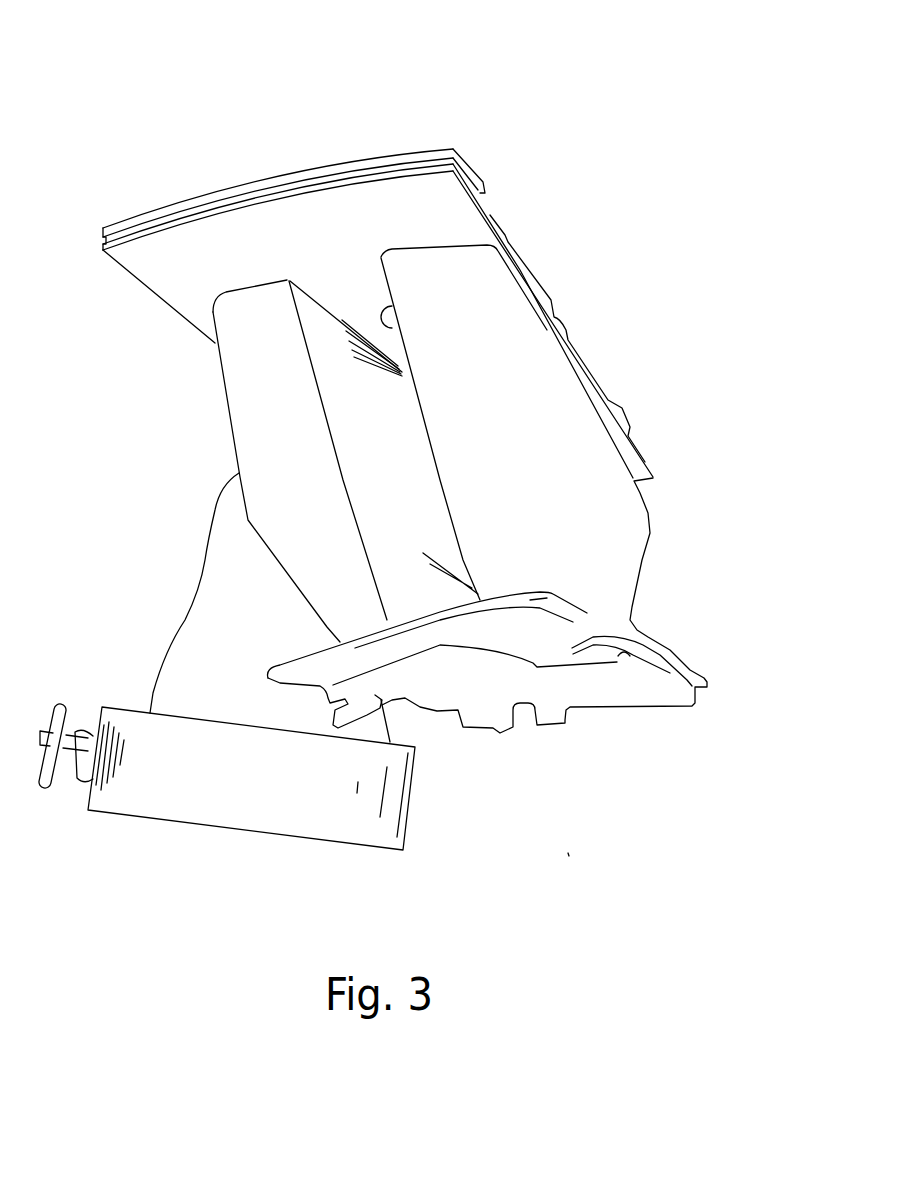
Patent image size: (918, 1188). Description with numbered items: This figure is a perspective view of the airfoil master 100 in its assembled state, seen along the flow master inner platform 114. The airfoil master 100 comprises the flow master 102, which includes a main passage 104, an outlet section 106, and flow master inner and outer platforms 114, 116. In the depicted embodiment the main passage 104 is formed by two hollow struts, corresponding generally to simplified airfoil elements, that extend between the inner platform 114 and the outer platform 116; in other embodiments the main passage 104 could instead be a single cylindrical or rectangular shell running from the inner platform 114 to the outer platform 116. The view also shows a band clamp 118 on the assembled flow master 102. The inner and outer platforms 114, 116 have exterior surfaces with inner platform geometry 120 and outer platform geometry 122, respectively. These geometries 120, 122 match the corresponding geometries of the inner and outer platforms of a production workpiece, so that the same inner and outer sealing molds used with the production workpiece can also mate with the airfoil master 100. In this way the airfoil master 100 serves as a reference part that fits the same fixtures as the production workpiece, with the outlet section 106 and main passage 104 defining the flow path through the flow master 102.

The airfoil master 100 is at (663, 81).
The flow master 102 is at (606, 512).
The main passage 104 is at (265, 380).
The outlet section 106 is at (213, 678).
The flow master inner platform 114 is at (553, 637).
The flow master outer platform 116 is at (368, 196).
The band clamp 118 is at (363, 828).
The inner platform geometry 120 is at (568, 853).
The outer platform geometry 122 is at (493, 211).